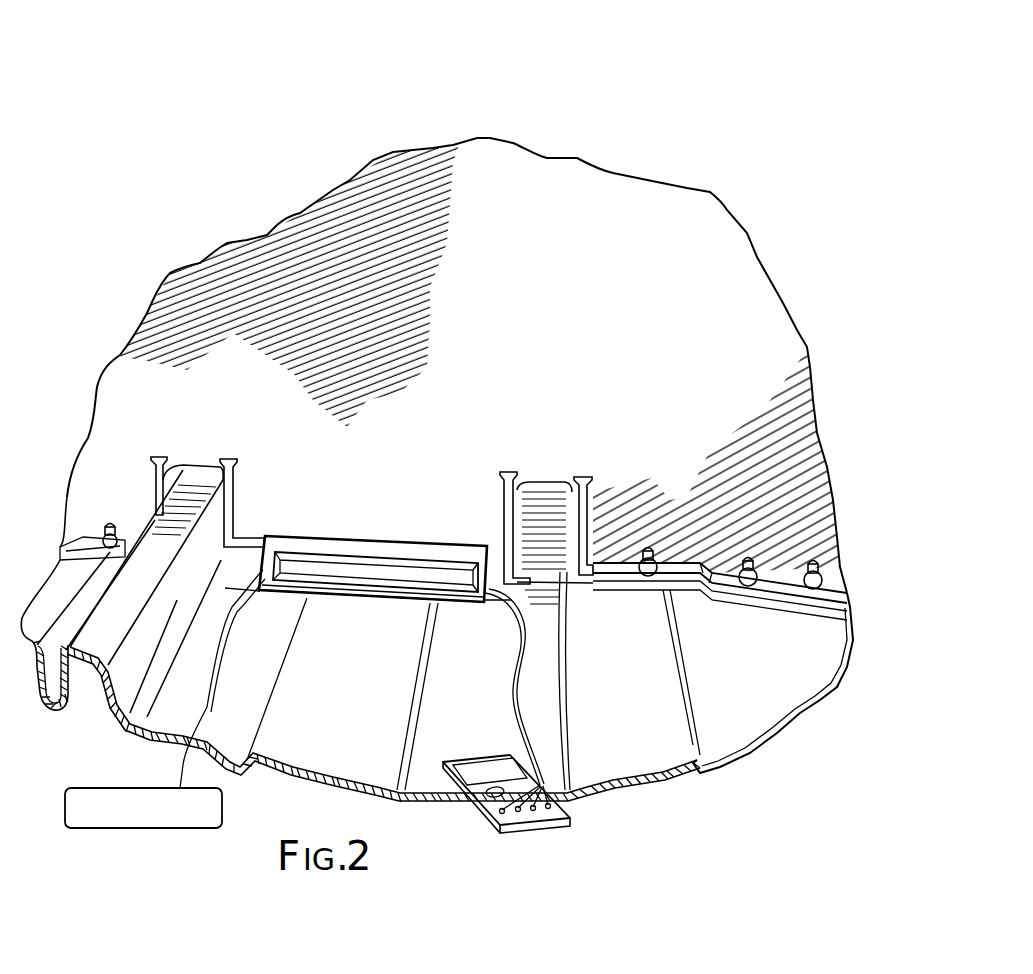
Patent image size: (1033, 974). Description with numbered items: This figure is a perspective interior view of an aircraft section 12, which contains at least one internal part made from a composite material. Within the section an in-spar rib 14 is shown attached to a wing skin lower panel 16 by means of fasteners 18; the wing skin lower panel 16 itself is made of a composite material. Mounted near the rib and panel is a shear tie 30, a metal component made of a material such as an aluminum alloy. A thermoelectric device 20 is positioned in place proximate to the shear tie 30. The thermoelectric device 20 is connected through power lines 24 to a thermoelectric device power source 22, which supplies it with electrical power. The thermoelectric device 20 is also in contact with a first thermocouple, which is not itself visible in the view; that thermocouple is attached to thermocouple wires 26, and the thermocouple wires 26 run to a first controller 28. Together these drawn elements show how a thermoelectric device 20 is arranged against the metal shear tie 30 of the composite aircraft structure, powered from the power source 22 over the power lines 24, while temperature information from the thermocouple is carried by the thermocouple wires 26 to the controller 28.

The aircraft section 12 is at (628, 145).
The in-spar rib 14 is at (546, 375).
The wing skin lower panel 16 is at (743, 683).
The fasteners 18 is at (813, 590).
The thermoelectric device 20 is at (470, 570).
The thermoelectric device power source 22 is at (112, 788).
The power lines 24 is at (210, 693).
The thermocouple wires 26 is at (518, 660).
The first controller 28 is at (580, 835).
The shear tie 30 is at (276, 540).